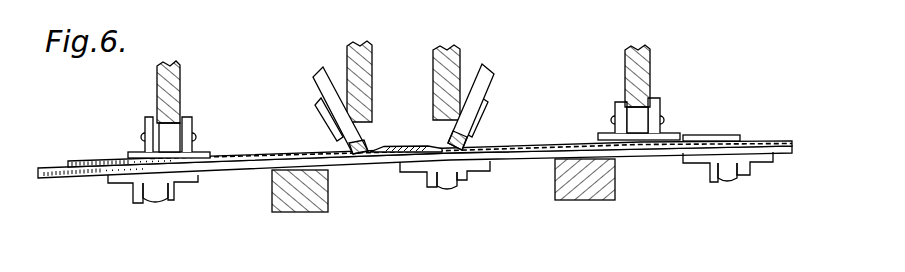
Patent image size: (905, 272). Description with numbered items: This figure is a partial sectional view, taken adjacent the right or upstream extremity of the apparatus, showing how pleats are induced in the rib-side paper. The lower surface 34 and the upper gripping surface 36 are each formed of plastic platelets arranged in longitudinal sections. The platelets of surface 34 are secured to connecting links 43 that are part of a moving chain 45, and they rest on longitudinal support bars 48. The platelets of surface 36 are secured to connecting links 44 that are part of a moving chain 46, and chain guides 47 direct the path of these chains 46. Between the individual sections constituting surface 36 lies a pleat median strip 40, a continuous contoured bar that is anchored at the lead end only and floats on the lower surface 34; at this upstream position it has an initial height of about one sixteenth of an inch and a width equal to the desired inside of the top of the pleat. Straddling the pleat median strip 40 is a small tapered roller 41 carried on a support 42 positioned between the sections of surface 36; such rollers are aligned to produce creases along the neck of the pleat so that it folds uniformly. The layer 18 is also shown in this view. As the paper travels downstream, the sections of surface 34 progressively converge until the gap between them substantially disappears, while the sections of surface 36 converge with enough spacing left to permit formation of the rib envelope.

The web layer 18 is at (497, 147).
The lower surface 34 is at (50, 183).
The gripping surface 36 is at (73, 160).
The pleat median strip 40 is at (397, 153).
The straddling roller 41 is at (440, 134).
The roller support 42 is at (430, 60).
The connecting link 43 is at (137, 192).
The connecting link 44 is at (190, 117).
The moving chain 45 is at (157, 190).
The moving chain 46 is at (168, 143).
The chain guide 47 is at (182, 73).
The longitudinal support bar 48 is at (300, 200).